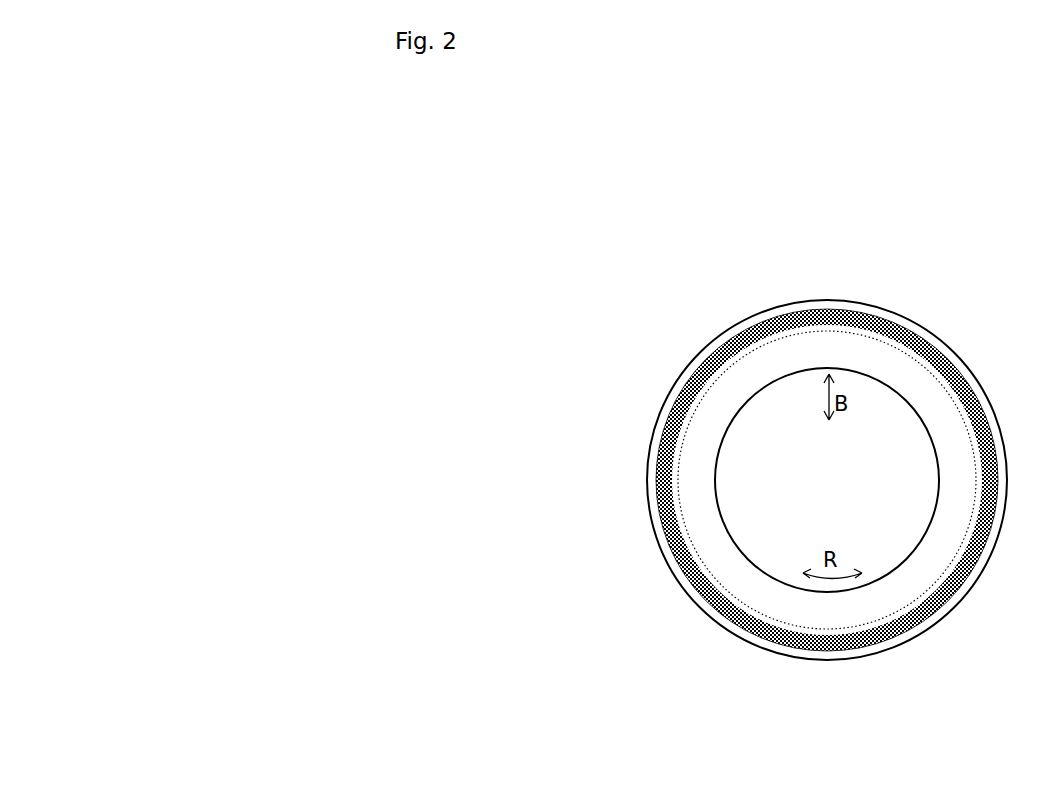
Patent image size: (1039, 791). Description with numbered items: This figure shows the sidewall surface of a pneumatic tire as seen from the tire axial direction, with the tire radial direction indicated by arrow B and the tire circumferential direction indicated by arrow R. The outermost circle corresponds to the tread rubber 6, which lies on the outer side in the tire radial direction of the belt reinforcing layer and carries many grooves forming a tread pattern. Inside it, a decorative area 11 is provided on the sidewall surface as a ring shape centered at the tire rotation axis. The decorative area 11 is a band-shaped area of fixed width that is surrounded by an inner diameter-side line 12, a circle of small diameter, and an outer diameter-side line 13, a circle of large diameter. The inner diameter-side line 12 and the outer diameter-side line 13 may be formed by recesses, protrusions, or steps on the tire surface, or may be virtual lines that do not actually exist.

The tread rubber 6 is at (920, 328).
The decorative area 11 is at (795, 318).
The inner diameter-side line 12 is at (697, 393).
The outer diameter-side line 13 is at (690, 383).